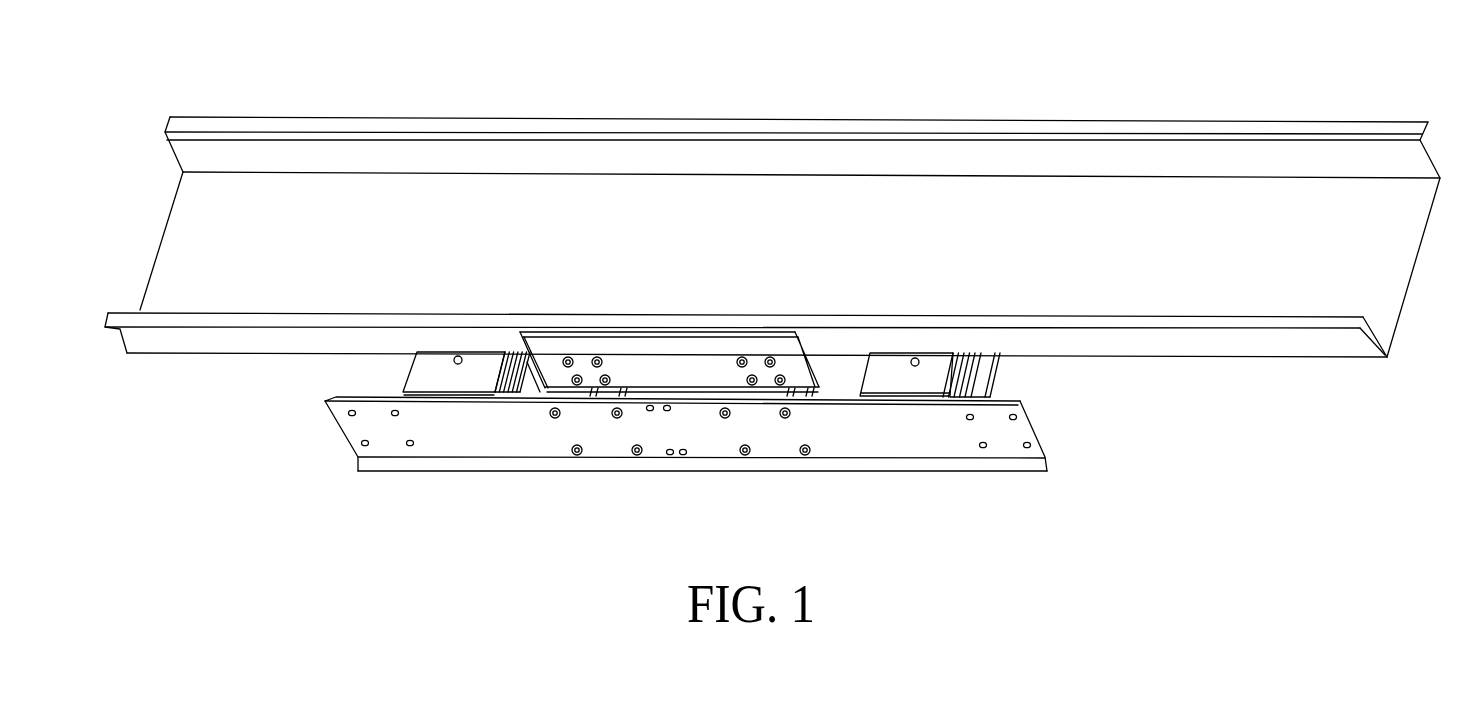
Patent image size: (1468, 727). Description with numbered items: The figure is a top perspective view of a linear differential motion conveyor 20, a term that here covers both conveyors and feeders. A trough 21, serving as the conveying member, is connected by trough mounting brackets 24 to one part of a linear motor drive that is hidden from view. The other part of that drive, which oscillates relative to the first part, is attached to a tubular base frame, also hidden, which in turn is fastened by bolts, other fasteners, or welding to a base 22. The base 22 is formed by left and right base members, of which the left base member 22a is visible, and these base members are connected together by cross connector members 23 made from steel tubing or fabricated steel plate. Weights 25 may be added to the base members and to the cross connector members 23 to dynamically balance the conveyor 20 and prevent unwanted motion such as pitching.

The linear differential motion conveyor 20 is at (829, 80).
The trough 21 is at (347, 117).
The base 22 is at (909, 476).
The left base member 22a is at (492, 447).
The cross connector members 23 is at (523, 385).
The trough mounting brackets 24 is at (667, 341).
The weights 25 is at (413, 384).